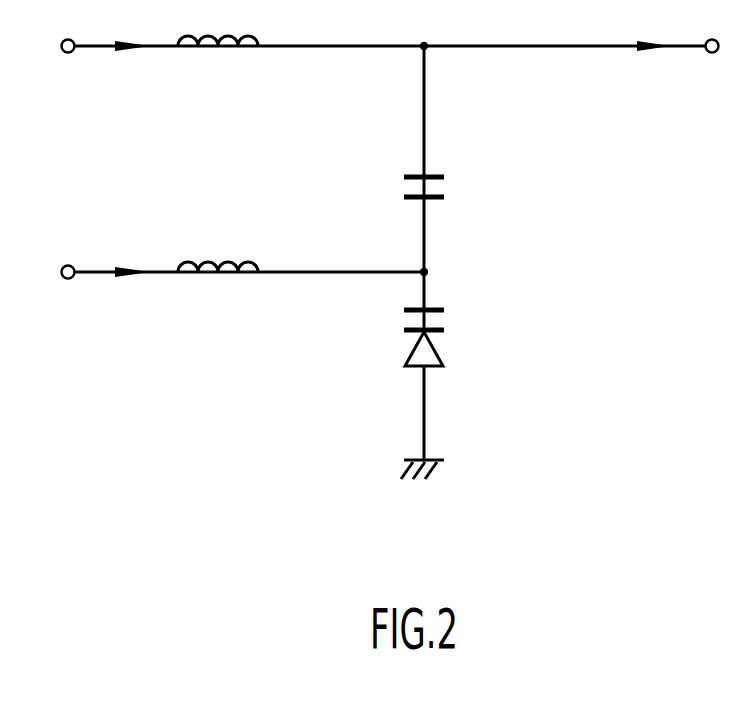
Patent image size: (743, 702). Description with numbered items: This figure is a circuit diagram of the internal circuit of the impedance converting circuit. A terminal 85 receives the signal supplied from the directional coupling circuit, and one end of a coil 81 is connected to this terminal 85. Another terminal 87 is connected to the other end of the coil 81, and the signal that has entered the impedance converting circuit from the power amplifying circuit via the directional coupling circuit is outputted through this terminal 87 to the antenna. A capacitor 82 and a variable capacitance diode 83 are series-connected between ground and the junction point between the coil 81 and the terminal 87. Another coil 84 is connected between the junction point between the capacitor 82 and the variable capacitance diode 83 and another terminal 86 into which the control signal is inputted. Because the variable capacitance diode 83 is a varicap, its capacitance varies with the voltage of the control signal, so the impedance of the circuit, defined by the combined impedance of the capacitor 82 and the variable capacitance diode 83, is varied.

The coil 81 is at (228, 56).
The capacitor 82 is at (446, 182).
The variable capacitance diode 83 is at (438, 346).
The coil 84 is at (228, 280).
The terminal 85 is at (68, 53).
The terminal 86 is at (68, 279).
The terminal 87 is at (712, 53).